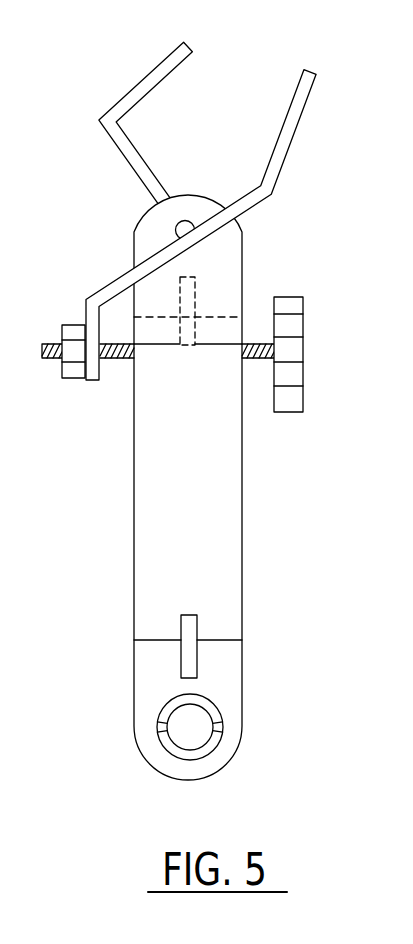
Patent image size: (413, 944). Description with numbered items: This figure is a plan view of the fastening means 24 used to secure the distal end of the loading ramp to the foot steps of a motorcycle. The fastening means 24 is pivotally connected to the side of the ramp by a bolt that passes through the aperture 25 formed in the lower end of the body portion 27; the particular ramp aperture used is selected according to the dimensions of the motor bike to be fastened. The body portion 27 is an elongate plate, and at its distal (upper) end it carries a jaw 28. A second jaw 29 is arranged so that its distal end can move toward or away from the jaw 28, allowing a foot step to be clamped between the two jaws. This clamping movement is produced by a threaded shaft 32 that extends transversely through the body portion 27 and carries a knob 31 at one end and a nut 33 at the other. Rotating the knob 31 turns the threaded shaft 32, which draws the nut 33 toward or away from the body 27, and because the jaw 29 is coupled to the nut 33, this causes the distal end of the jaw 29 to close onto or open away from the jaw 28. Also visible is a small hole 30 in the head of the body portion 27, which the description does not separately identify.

The fastening means 24 is at (202, 401).
The aperture 25 is at (192, 713).
The body portion 27 is at (160, 543).
The jaw 28 is at (160, 63).
The jaw 29 is at (296, 132).
The hole 30 is at (183, 219).
The knob 31 is at (303, 325).
The threaded shaft 32 is at (120, 364).
The nut 33 is at (73, 366).